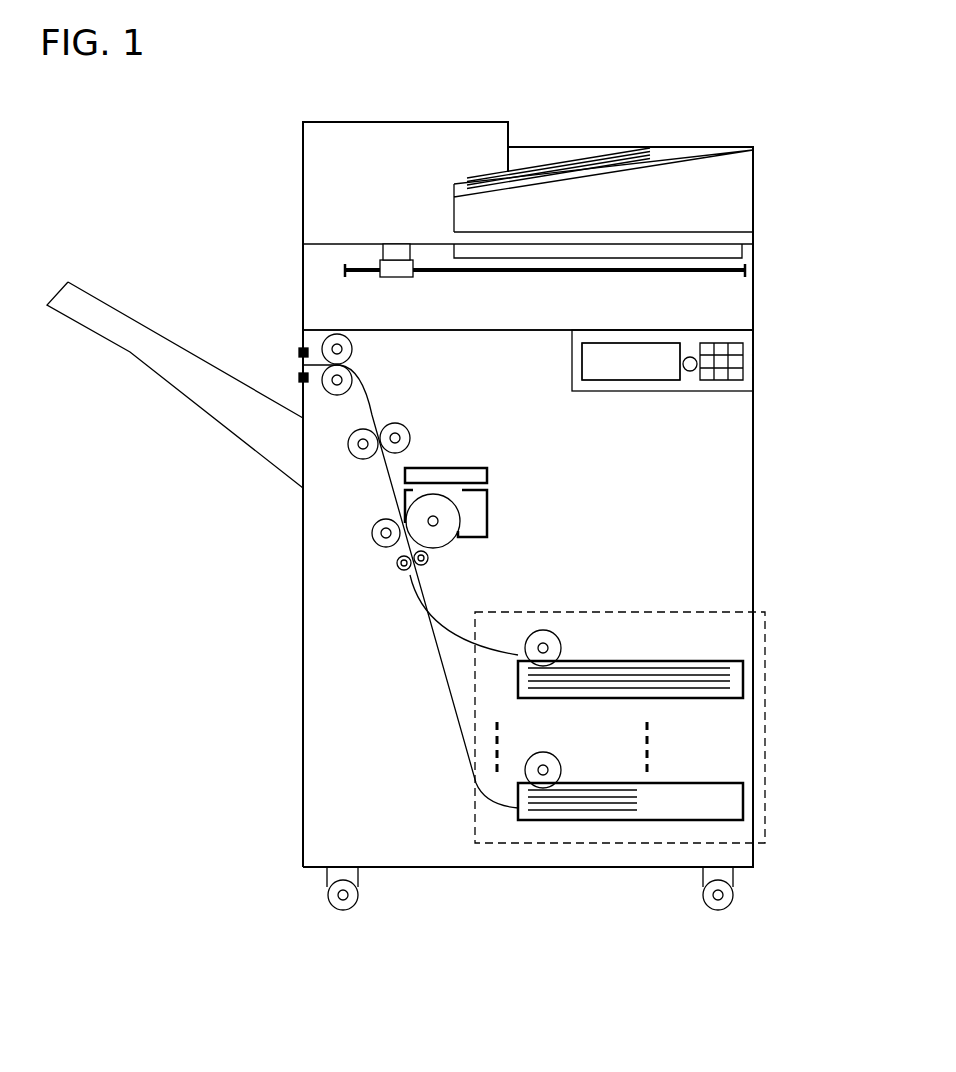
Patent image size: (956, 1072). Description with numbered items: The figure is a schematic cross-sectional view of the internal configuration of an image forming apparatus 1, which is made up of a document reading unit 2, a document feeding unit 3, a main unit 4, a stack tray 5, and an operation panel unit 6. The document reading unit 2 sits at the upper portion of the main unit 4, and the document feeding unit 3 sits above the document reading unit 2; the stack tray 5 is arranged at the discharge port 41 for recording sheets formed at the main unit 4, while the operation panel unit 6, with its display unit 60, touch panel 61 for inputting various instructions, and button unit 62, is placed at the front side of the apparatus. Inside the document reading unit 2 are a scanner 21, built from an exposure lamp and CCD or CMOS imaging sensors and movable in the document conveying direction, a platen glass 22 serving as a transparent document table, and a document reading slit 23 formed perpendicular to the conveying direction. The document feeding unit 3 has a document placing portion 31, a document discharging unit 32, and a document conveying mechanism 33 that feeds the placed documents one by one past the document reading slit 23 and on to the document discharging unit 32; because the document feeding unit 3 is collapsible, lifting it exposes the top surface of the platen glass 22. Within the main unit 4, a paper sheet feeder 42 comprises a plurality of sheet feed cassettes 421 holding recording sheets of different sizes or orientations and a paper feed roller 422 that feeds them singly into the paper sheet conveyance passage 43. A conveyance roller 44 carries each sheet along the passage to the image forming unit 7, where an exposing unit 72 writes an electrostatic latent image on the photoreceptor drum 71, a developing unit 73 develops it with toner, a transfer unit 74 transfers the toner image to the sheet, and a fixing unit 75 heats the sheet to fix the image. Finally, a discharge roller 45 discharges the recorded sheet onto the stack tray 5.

The image forming apparatus 1 is at (235, 148).
The document reading unit 2 is at (290, 278).
The document feeding unit 3 is at (290, 184).
The main unit 4 is at (766, 574).
The stack tray 5 is at (195, 412).
The operation panel unit 6 is at (753, 348).
The image forming unit 7 is at (570, 470).
The scanner 21 is at (400, 278).
The platen glass 22 is at (742, 253).
The document reading slit 23 is at (400, 248).
The document placing portion 31 is at (658, 160).
The document discharging unit 32 is at (628, 230).
The document conveying mechanism 33 is at (407, 127).
The discharge port 41 is at (300, 366).
The paper sheet feeder 42 is at (765, 662).
The paper sheet conveyance passage 43 is at (415, 578).
The conveyance roller 44 is at (397, 563).
The discharge roller 45 is at (353, 348).
The display unit 60 is at (625, 368).
The touch panel 61 is at (631, 361).
The button unit 62 is at (715, 380).
The photoreceptor drum 71 is at (442, 550).
The exposing unit 72 is at (488, 476).
The developing unit 73 is at (488, 508).
The transfer unit 74 is at (372, 530).
The fixing unit 75 is at (411, 436).
The sheet feed cassettes 421 is at (677, 660).
The paper feed roller 422 is at (562, 650).